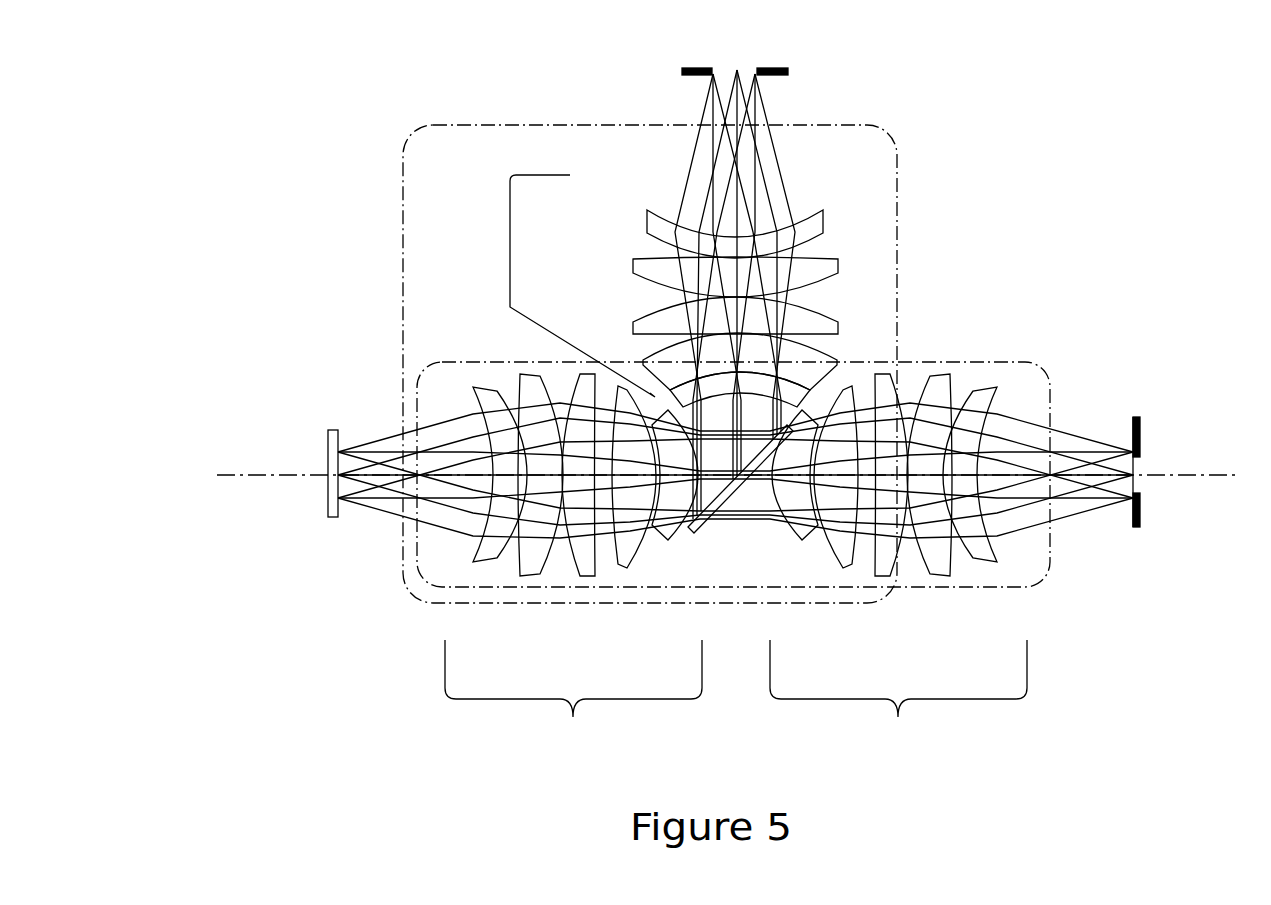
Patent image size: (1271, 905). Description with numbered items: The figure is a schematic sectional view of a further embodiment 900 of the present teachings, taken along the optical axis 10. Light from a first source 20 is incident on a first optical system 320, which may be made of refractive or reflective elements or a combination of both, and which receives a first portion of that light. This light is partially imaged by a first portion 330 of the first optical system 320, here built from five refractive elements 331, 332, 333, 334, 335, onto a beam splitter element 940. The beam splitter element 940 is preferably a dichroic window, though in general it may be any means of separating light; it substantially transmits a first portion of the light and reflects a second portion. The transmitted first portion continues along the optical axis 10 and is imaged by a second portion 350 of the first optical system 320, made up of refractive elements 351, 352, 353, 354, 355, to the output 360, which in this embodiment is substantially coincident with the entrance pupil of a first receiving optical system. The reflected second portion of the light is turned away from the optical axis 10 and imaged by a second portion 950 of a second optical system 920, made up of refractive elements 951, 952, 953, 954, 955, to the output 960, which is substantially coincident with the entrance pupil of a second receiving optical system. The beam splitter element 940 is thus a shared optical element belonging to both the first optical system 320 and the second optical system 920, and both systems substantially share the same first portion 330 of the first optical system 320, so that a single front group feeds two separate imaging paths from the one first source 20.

The optical axis 10 is at (267, 480).
The first source 20 is at (333, 520).
The first optical system 320 is at (1050, 362).
The first portion of the first optical system 330 is at (573, 565).
The refractive element 331 is at (477, 565).
The refractive element 332 is at (522, 578).
The refractive element 333 is at (577, 578).
The refractive element 334 is at (633, 566).
The refractive element 335 is at (670, 541).
The second portion of the first optical system 350 is at (898, 565).
The refractive element 351 is at (990, 565).
The refractive element 352 is at (947, 578).
The refractive element 353 is at (883, 578).
The refractive element 354 is at (848, 566).
The refractive element 355 is at (803, 541).
The output 360 is at (1137, 529).
The embodiment 900 is at (308, 322).
The second optical system 920 is at (540, 123).
The beam splitter element 940 is at (700, 531).
The second portion of the second optical system 950 is at (508, 248).
The refractive element 951 is at (647, 217).
The refractive element 952 is at (634, 258).
The refractive element 953 is at (640, 320).
The refractive element 954 is at (645, 360).
The refractive element 955 is at (657, 396).
The output 960 is at (682, 71).